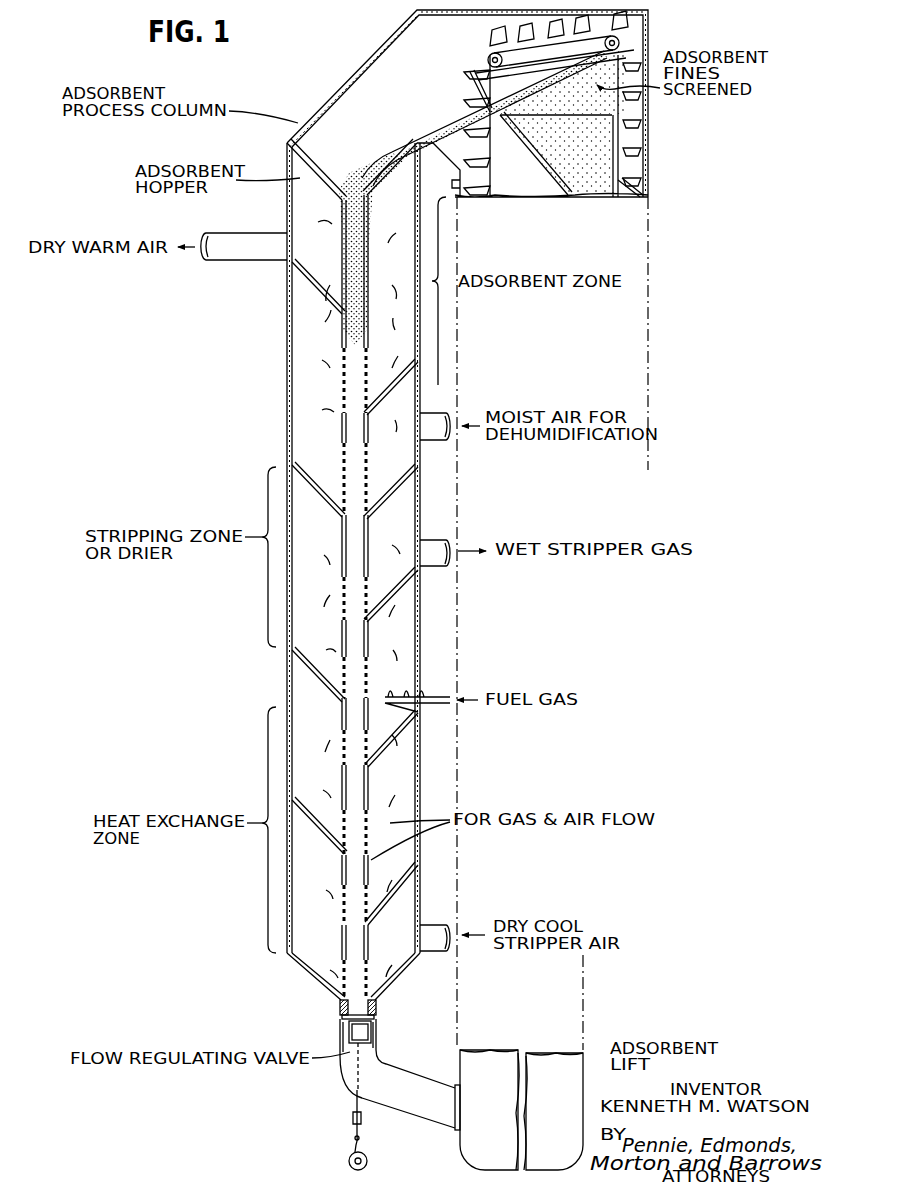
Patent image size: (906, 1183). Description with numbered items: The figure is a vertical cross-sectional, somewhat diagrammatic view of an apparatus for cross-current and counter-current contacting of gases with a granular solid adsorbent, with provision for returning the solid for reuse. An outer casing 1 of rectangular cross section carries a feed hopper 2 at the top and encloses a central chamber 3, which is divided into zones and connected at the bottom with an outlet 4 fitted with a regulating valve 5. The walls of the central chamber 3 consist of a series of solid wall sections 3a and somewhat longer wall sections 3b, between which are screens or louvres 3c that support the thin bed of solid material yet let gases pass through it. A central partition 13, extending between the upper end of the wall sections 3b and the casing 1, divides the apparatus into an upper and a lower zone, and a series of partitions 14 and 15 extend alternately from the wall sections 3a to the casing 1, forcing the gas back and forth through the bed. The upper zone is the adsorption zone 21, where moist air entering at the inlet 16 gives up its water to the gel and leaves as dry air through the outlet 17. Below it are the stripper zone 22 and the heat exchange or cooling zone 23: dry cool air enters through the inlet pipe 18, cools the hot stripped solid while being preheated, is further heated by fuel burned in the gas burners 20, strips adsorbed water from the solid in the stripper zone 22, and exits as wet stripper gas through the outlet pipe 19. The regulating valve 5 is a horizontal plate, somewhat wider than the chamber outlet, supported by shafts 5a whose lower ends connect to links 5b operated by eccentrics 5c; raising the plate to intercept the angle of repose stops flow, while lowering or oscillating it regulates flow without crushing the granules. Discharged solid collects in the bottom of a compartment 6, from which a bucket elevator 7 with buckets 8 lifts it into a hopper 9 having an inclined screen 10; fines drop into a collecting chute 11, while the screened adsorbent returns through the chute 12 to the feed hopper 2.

The outer casing 1 is at (287, 312).
The feed hopper 2 is at (295, 152).
The central chamber 3 is at (341, 212).
The solid wall sections 3a is at (341, 328).
The longer wall sections 3b is at (341, 531).
The screens or louvres 3c is at (343, 248).
The outlet 4 is at (408, 1106).
The regulating valve 5 is at (377, 1060).
The shafts 5a is at (350, 1068).
The links 5b is at (353, 1144).
The eccentrics 5c is at (348, 1160).
The compartment 6 is at (478, 1148).
The bucket elevator 7 is at (642, 139).
The buckets 8 is at (533, 27).
The hopper 9 is at (468, 90).
The inclined screen 10 is at (570, 88).
The collecting chute 11 is at (536, 155).
The chute 12 is at (436, 136).
The central partition 13 is at (402, 480).
The partitions 14 is at (392, 386).
The partitions 15 is at (318, 284).
The inlet for moist air 16 is at (433, 418).
The outlet for dry air 17 is at (232, 254).
The inlet for dry cool air 18 is at (436, 925).
The outlet for wet stripper gas 19 is at (440, 565).
The gas burners 20 is at (425, 697).
The adsorption zone 21 is at (446, 313).
The stripper zone 22 is at (266, 583).
The heat exchange or cooling zone 23 is at (266, 872).